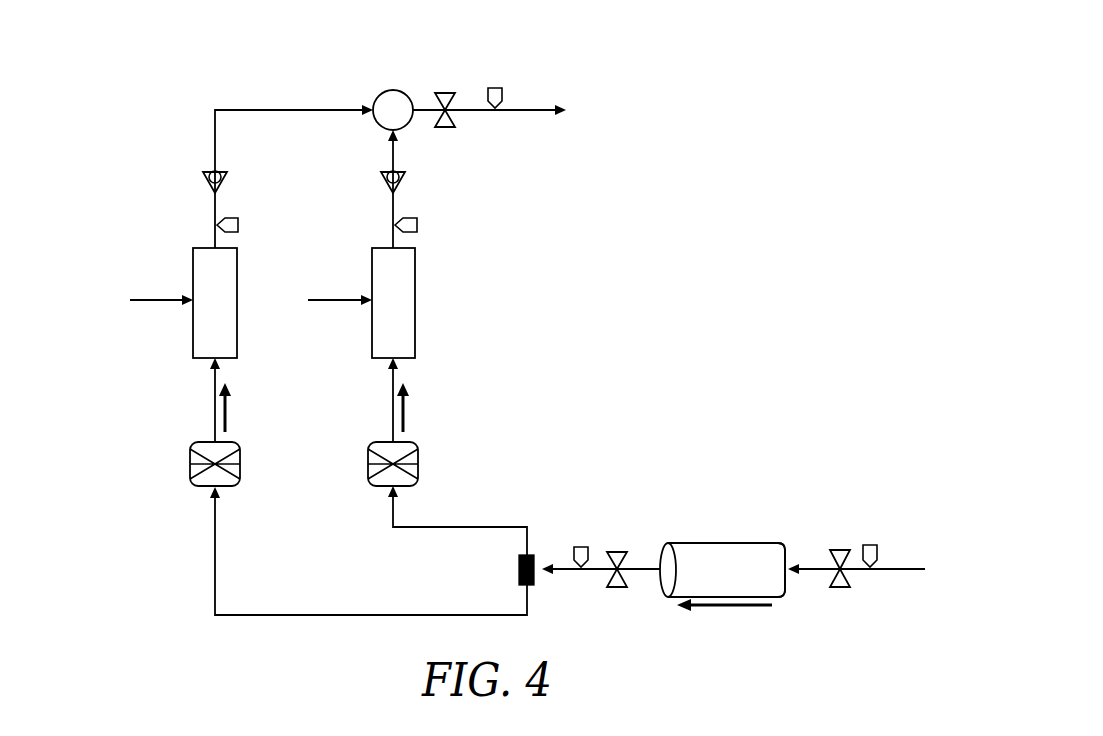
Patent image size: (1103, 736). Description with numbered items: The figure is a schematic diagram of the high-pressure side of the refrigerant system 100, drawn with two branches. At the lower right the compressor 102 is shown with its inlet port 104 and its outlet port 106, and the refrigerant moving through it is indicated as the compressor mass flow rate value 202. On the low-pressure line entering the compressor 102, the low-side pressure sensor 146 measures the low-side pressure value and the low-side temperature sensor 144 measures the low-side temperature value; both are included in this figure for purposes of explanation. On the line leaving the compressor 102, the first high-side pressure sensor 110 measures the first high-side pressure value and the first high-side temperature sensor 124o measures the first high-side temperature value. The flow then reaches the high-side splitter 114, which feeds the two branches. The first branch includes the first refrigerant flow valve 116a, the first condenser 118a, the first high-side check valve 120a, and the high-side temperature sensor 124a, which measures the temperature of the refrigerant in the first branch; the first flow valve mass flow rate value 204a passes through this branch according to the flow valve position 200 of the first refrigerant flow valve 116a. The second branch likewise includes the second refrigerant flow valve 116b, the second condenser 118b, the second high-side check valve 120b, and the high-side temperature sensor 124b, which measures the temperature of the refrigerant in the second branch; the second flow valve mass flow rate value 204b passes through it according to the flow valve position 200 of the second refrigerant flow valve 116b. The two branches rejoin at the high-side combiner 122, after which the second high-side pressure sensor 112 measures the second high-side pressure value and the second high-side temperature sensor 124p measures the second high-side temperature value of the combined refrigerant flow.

The refrigerant system 100 is at (270, 91).
The compressor 102 is at (715, 542).
The inlet port 104 is at (786, 592).
The outlet port 106 is at (664, 593).
The first high-side pressure sensor 110 is at (617, 552).
The second high-side pressure sensor 112 is at (445, 93).
The high-side splitter 114 is at (518, 560).
The first refrigerant flow valve 116a is at (190, 478).
The second refrigerant flow valve 116b is at (368, 478).
The first condenser 118a is at (193, 268).
The second condenser 118b is at (372, 268).
The first high-side check valve 120a is at (211, 188).
The second high-side check valve 120b is at (389, 188).
The high-side combiner 122 is at (389, 91).
The high-side temperature sensor 124a is at (237, 216).
The high-side temperature sensor 124b is at (416, 216).
The first high-side temperature sensor 124o is at (581, 546).
The second high-side temperature sensor 124p is at (495, 87).
The low-side temperature sensor 144 is at (870, 544).
The low-side pressure sensor 146 is at (838, 550).
The flow valve position 200 is at (231, 490).
The compressor mass flow rate value 202 is at (750, 640).
The first flow valve mass flow rate value 204a is at (285, 425).
The second flow valve mass flow rate value 204b is at (462, 425).